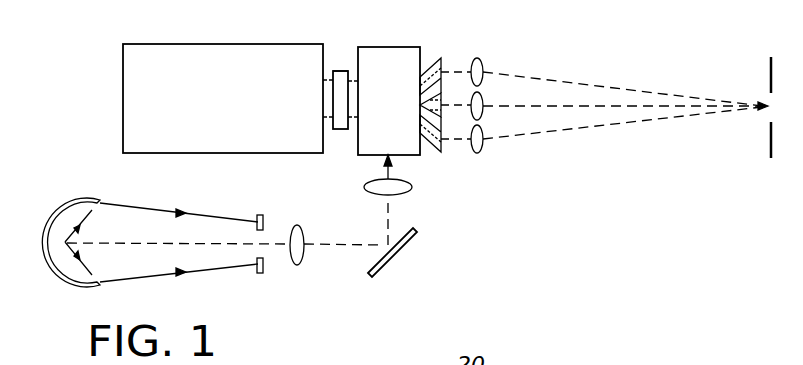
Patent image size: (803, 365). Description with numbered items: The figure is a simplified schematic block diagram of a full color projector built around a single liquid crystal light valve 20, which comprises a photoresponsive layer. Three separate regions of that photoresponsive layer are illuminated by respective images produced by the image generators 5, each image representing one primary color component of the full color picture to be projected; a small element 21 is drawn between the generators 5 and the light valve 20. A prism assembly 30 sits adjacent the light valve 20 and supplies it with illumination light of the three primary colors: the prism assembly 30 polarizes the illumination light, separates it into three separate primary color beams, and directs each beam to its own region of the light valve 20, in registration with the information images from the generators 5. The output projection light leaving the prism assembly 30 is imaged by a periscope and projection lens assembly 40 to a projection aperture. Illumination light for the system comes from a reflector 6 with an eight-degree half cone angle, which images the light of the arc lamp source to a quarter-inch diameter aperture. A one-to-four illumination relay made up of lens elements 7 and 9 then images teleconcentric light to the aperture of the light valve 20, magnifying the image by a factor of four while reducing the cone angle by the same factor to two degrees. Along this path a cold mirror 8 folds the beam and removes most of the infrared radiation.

The image generators 5 is at (215, 44).
The liquid crystal light valve 20 is at (336, 70).
The image combiner 21 is at (331, 73).
The prism assembly 30 is at (395, 47).
The periscope and projection lens assembly 40 is at (441, 60).
The reflector 6 is at (57, 253).
The lens element 7 is at (303, 258).
The cold mirror 8 is at (382, 262).
The lens element 9 is at (372, 196).